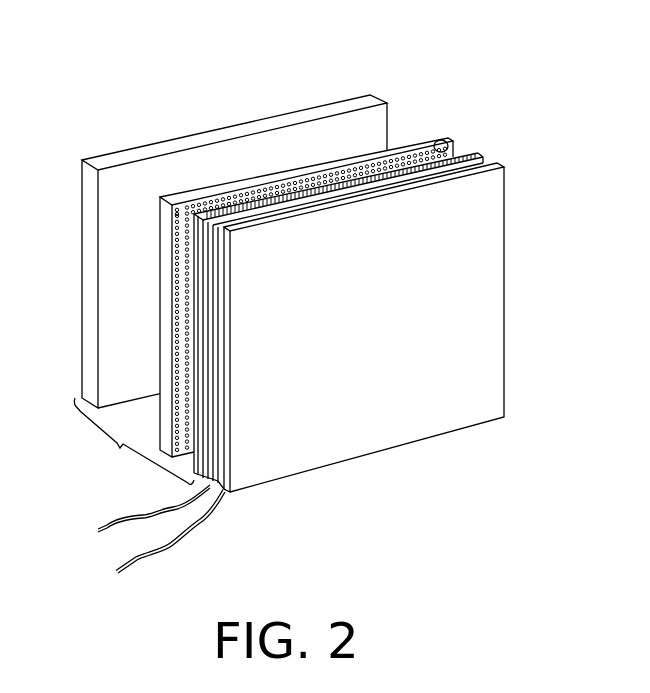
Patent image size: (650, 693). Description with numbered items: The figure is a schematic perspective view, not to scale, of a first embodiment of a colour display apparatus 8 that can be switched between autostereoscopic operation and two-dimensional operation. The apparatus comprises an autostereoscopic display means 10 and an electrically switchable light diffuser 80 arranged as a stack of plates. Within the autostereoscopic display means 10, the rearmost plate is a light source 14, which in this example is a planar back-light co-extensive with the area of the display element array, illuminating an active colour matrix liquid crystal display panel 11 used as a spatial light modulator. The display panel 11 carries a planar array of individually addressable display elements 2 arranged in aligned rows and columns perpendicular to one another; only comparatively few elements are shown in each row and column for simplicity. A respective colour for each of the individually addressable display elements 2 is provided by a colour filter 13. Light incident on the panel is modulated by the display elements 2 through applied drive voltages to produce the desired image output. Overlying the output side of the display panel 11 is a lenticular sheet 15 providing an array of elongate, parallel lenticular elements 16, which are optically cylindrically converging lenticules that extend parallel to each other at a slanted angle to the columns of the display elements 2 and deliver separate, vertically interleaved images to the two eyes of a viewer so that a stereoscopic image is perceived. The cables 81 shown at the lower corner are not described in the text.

The colour display apparatus 8 is at (513, 52).
The light source 14 is at (312, 110).
The active colour matrix liquid crystal display panel 11 is at (418, 137).
The individually addressable display elements 2 is at (449, 150).
The lenticular sheet 15 is at (483, 155).
The colour filter 13 is at (172, 268).
The electrically switchable light diffuser 80 is at (505, 352).
The autostereoscopic display means 10 is at (134, 441).
The lenticular elements 16 is at (193, 483).
The cables 81 is at (118, 567).